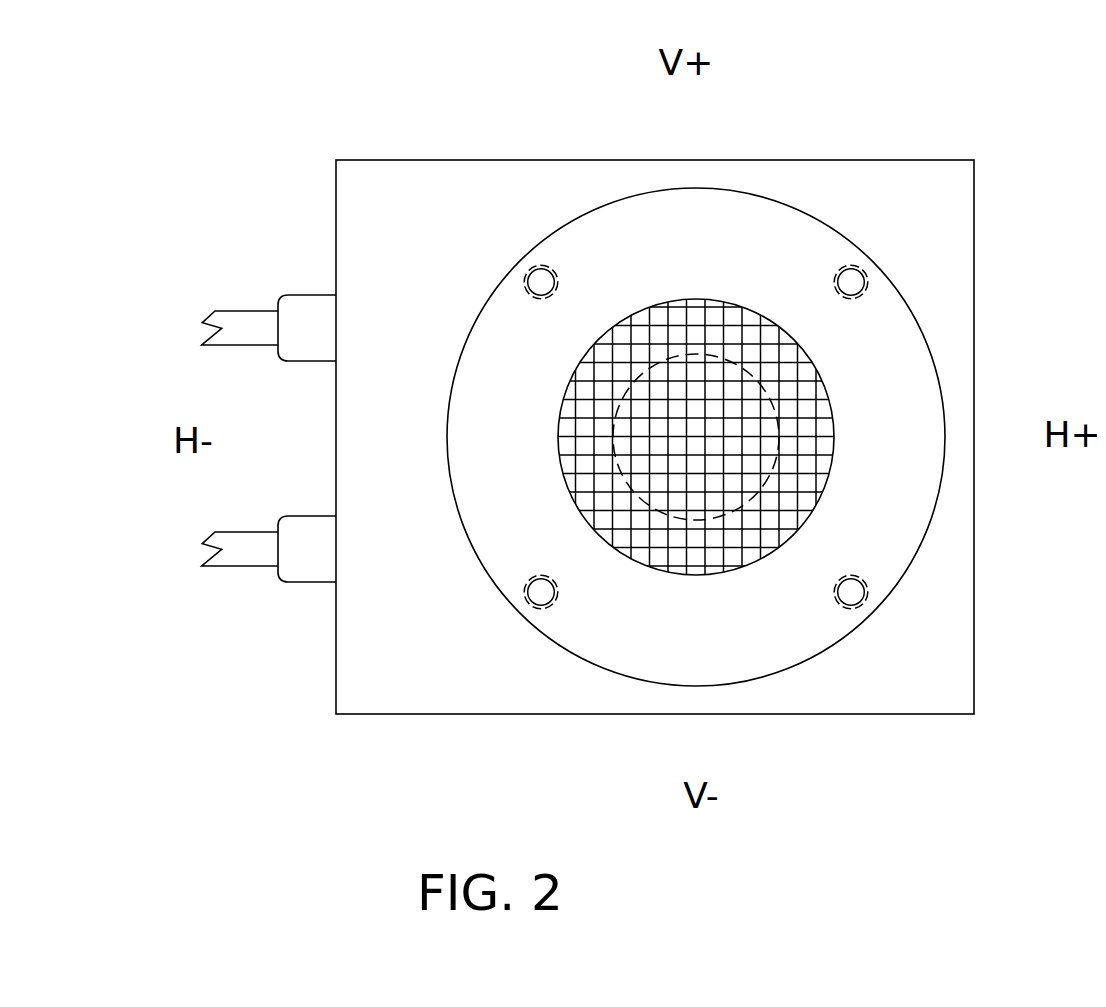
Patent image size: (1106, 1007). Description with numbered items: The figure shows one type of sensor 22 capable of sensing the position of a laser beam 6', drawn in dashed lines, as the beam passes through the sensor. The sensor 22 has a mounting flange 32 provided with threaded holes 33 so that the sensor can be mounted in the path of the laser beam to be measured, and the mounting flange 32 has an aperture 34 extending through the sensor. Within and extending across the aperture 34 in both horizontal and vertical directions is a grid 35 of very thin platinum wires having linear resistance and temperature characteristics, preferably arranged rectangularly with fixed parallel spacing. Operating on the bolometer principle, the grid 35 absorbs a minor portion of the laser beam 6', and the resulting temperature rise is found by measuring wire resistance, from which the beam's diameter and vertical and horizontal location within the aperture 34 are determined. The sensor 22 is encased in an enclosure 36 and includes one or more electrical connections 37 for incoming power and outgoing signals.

The sensor 22 is at (343, 127).
The enclosure 36 is at (336, 193).
The mounting flange 32 is at (808, 228).
The threaded holes 33 is at (862, 268).
The aperture 34 is at (828, 487).
The grid 35 is at (812, 422).
The laser beam 6' is at (696, 306).
The electrical connections 37 is at (230, 320).